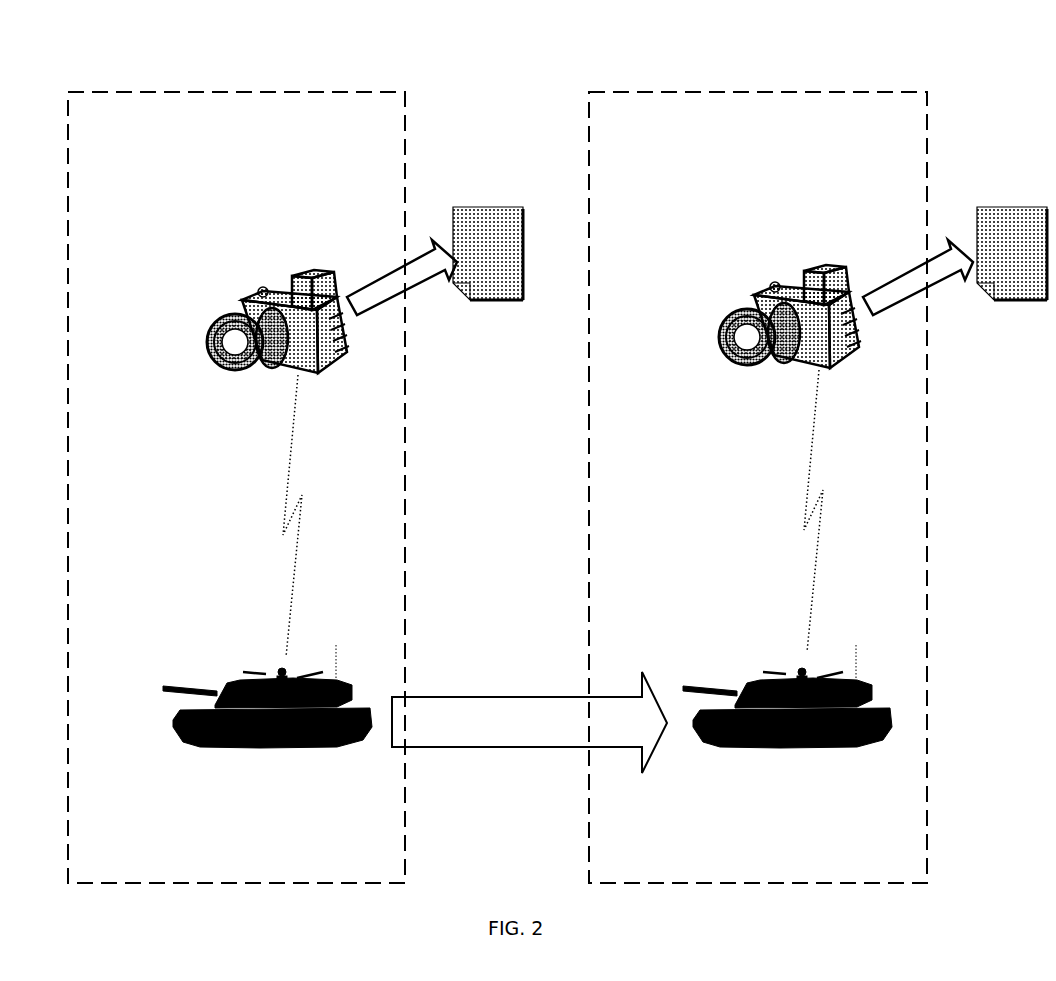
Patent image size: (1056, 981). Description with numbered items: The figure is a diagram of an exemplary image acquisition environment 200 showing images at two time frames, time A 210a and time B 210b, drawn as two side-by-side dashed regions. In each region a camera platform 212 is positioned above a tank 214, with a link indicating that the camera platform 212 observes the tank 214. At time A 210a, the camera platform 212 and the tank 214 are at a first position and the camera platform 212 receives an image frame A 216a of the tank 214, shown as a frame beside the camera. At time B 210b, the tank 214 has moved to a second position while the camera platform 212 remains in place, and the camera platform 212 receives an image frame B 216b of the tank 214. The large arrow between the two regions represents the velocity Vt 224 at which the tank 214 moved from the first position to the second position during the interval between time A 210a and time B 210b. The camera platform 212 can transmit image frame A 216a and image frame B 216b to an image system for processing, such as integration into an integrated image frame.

The image acquisition environment 200 is at (557, 458).
The time frame A 210a is at (230, 83).
The time frame B 210b is at (750, 83).
The camera platform 212 is at (812, 262).
The tank 214 is at (293, 748).
The image frame A 216a is at (435, 307).
The image frame B 216b is at (955, 307).
The velocity Vt 224 is at (542, 693).